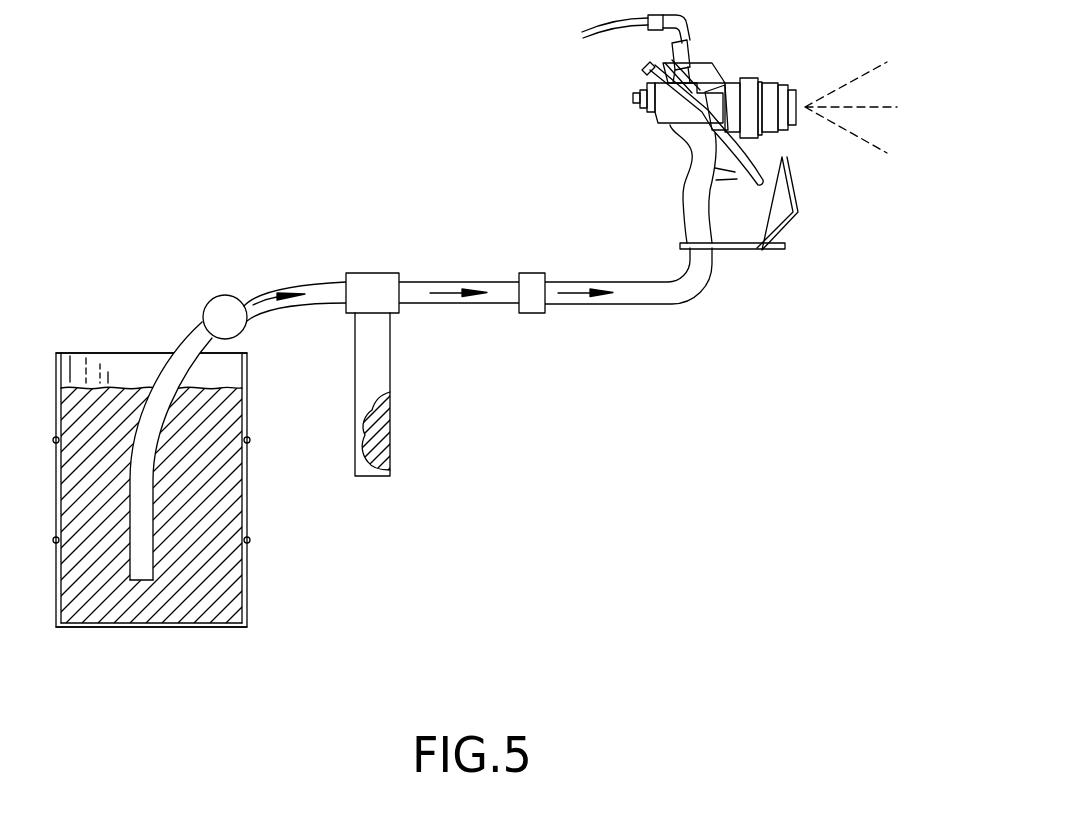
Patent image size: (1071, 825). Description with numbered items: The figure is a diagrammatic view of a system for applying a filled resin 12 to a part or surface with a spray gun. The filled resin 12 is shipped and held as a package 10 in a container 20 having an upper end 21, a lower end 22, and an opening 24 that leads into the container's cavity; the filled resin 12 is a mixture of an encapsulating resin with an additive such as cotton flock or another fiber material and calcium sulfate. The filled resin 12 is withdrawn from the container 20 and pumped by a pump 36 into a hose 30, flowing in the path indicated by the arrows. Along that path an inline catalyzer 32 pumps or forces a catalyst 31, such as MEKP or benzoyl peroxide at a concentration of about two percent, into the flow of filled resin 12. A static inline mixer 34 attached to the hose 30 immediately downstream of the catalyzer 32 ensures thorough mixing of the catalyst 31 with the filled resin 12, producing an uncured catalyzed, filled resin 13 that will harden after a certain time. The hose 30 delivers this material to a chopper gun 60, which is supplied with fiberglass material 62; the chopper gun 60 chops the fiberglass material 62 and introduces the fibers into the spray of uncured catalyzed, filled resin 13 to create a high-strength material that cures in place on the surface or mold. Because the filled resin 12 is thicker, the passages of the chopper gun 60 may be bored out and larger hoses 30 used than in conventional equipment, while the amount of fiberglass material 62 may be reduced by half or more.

The package 10 is at (98, 280).
The filled resin 12 is at (218, 577).
The uncured catalyzed, filled resin 13 is at (850, 78).
The container 20 is at (248, 493).
The upper end 21 is at (113, 353).
The lower end 22 is at (158, 632).
The opening 24 is at (223, 368).
The hose 30 is at (320, 282).
The catalyst 31 is at (378, 440).
The inline catalyzer 32 is at (392, 350).
The static inline mixer 34 is at (428, 282).
The pump 36 is at (214, 297).
The chopper gun 60 is at (743, 212).
The fiberglass material 62 is at (623, 32).